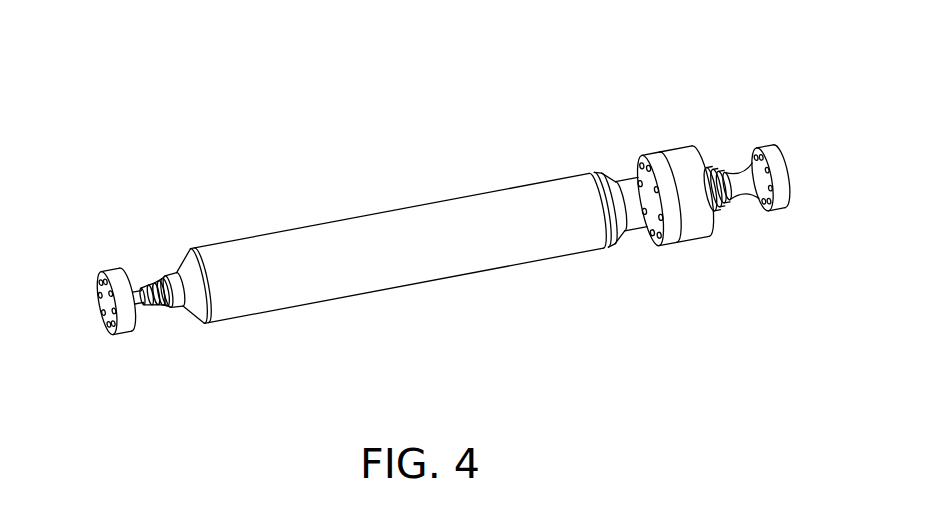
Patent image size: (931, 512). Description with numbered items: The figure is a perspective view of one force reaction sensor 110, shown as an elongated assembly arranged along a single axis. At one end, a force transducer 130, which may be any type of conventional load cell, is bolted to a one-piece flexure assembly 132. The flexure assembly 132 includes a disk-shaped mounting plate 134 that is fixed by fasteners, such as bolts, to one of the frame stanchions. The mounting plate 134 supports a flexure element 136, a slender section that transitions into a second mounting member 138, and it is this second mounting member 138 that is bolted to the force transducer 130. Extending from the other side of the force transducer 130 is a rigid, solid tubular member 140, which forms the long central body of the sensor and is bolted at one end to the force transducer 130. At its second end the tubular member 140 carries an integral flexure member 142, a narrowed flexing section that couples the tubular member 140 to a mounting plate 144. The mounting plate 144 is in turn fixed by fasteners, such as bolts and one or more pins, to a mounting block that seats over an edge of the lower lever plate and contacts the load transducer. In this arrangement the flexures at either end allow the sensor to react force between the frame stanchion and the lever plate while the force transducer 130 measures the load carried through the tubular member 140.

The force reaction sensor 110 is at (251, 196).
The force transducer 130 is at (677, 241).
The flexure assembly 132 is at (734, 118).
The mounting plate 134 is at (772, 148).
The flexure element 136 is at (745, 196).
The second mounting member 138 is at (689, 148).
The tubular member 140 is at (425, 283).
The flexure member 142 is at (167, 308).
The mounting plate 144 is at (125, 330).